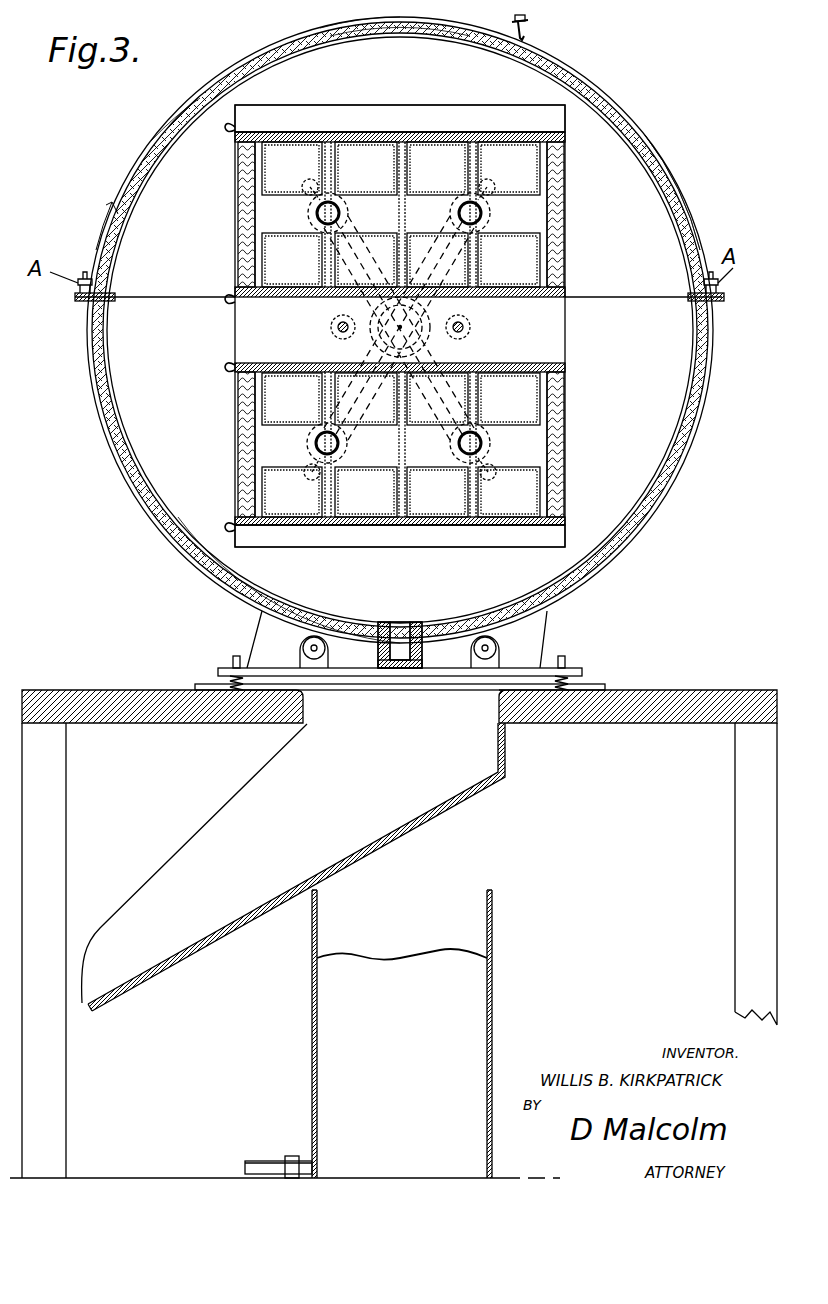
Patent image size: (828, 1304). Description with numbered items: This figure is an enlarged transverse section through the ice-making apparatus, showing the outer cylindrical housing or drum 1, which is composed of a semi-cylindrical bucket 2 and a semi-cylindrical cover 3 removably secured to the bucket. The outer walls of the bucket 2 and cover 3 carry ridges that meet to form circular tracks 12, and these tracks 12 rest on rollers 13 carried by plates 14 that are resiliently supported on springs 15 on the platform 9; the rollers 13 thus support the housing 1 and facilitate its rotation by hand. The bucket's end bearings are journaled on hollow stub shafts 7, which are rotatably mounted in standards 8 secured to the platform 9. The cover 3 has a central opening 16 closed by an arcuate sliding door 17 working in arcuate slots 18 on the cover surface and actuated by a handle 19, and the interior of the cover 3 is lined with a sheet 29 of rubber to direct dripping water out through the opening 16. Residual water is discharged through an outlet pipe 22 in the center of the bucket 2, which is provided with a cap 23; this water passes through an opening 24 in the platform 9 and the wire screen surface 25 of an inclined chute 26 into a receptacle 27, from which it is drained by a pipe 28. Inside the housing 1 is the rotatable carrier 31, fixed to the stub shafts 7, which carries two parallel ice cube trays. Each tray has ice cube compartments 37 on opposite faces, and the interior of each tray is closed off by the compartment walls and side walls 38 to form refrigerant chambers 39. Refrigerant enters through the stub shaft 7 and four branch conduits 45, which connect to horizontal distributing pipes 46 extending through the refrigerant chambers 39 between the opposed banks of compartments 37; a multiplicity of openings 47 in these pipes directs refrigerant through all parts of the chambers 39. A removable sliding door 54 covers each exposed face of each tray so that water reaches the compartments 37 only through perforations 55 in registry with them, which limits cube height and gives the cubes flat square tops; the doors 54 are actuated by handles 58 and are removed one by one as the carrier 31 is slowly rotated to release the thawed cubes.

The outer cylindrical housing or drum 1 is at (652, 204).
The semi-cylindrical bucket 2 is at (178, 517).
The semi-cylindrical cover 3 is at (652, 160).
The hollow stub shafts 7 is at (430, 318).
The standards 8 is at (400, 670).
The floor or platform 9 is at (670, 694).
The circular bands or tracks 12 is at (565, 63).
The rollers 13 is at (303, 646).
The plates 14 is at (363, 670).
The springs 15 is at (230, 682).
The central opening 16 is at (398, 32).
The arcuate sliding door 17 is at (322, 28).
The arcuate slots or tracks 18 is at (150, 141).
The handle 19 is at (528, 24).
The outlet pipe 22 is at (400, 624).
The cap 23 is at (422, 660).
The opening in platform 24 is at (452, 715).
The wire screen surface 25 is at (402, 823).
The inclined chute 26 is at (180, 943).
The receptacle 27 is at (471, 983).
The drain pipe 28 is at (267, 1160).
The rubber sheet lining 29 is at (125, 230).
The rotatable carrier 31 is at (404, 331).
The ice cube compartments 37 is at (307, 153).
The side walls 38 is at (238, 252).
The refrigerant chambers 39 is at (523, 224).
The branch conduits 45 is at (356, 216).
The horizontal distributing pipes 46 is at (316, 212).
The openings 47 is at (339, 210).
The removable sliding door 54 is at (565, 125).
The holes or perforations 55 is at (385, 150).
The handles 58 is at (226, 128).